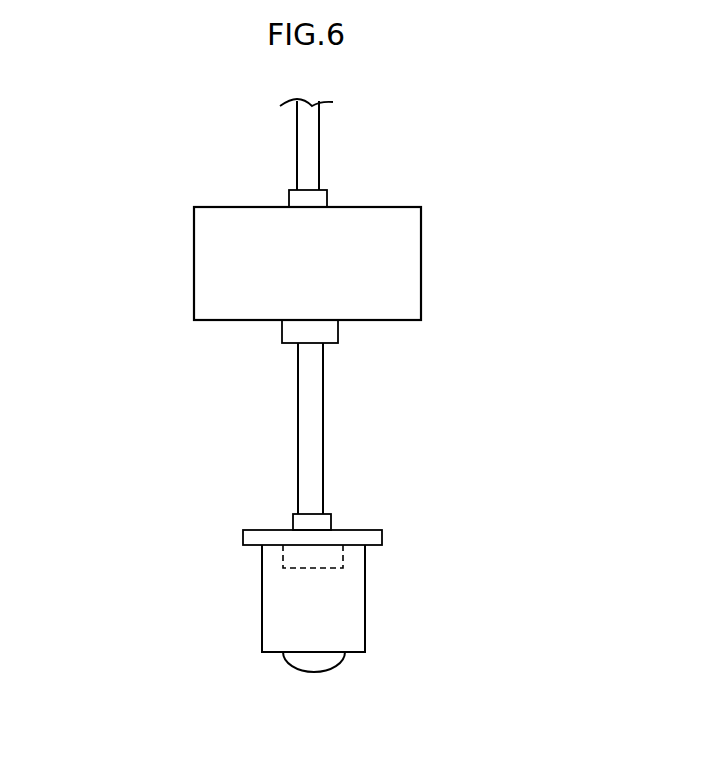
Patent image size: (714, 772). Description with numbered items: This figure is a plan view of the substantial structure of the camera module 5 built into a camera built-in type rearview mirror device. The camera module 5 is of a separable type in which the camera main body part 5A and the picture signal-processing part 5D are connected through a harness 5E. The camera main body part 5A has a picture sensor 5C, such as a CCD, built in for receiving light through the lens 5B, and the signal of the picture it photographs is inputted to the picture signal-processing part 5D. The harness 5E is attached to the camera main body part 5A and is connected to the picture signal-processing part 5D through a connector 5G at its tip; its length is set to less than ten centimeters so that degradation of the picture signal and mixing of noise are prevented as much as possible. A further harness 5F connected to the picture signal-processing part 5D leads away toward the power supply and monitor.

The camera module 5 is at (150, 267).
The camera main body part 5A is at (365, 602).
The lens 5B is at (323, 670).
The picture sensor 5C is at (305, 568).
The picture signal-processing part 5D is at (422, 262).
The harness 5E is at (324, 453).
The harness 5F is at (320, 135).
The connector 5G is at (280, 329).